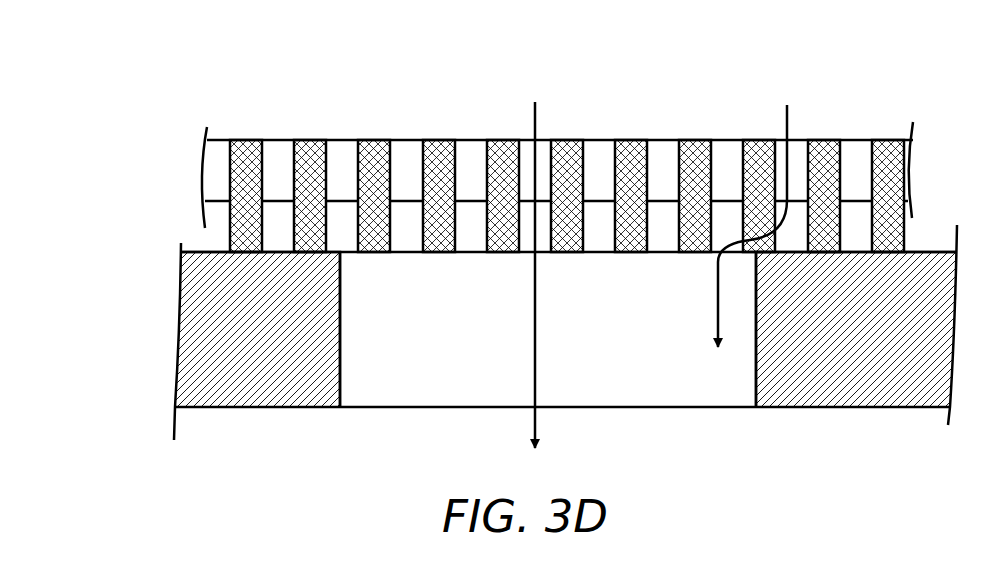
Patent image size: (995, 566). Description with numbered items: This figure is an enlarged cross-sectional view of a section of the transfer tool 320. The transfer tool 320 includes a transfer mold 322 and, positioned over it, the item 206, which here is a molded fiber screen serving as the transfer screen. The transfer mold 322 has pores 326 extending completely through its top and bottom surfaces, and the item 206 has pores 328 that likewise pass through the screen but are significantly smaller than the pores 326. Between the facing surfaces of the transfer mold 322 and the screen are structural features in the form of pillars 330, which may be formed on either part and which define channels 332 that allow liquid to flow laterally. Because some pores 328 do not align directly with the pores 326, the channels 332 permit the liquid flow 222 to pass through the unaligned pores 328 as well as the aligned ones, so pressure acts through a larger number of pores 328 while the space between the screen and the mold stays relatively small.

The item 206 is at (477, 139).
The pores 328 is at (337, 140).
The transfer tool 320 is at (565, 260).
The pillars 330 is at (231, 236).
The channels 332 is at (135, 233).
The liquid flow 222 is at (717, 302).
The transfer mold 322 is at (275, 423).
The pores 326 is at (723, 408).